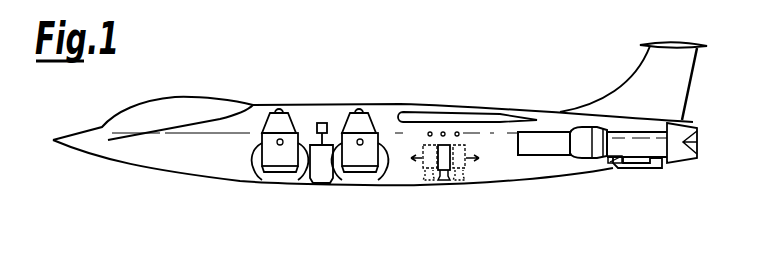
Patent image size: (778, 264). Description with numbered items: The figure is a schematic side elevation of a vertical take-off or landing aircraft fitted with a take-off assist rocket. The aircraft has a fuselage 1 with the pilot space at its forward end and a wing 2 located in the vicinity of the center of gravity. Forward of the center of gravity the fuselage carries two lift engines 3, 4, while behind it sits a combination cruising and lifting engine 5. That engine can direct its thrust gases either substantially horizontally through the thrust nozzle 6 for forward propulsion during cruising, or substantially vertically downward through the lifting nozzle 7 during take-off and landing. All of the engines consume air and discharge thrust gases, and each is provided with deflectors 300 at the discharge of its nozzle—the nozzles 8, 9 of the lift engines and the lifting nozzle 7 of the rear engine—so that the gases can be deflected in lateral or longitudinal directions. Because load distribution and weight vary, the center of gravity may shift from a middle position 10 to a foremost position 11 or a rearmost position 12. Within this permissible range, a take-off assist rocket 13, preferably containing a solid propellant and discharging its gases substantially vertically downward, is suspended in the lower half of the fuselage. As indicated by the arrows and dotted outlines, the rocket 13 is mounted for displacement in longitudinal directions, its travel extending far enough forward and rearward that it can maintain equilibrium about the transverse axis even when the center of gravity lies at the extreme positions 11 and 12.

The fuselage 1 is at (207, 167).
The wing 2 is at (411, 116).
The lift engine 3 is at (284, 122).
The lift engine 4 is at (368, 122).
The combination cruising and lifting engine 5 is at (585, 137).
The thrust nozzle 6 is at (698, 131).
The lifting nozzle 7 is at (638, 165).
The nozzle 8 is at (270, 171).
The nozzle 9 is at (358, 171).
The middle position of center of gravity 10 is at (443, 132).
The foremost position of center of gravity 11 is at (430, 132).
The rearmost position of center of gravity 12 is at (458, 132).
The take-off assist rocket 13 is at (445, 181).
The deflectors 300 is at (300, 182).